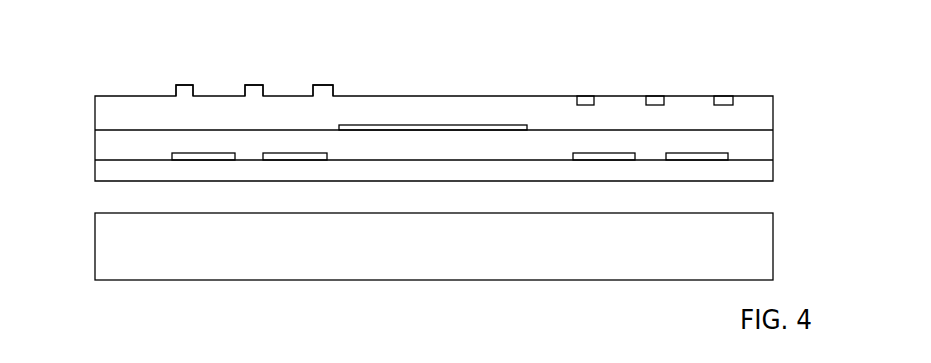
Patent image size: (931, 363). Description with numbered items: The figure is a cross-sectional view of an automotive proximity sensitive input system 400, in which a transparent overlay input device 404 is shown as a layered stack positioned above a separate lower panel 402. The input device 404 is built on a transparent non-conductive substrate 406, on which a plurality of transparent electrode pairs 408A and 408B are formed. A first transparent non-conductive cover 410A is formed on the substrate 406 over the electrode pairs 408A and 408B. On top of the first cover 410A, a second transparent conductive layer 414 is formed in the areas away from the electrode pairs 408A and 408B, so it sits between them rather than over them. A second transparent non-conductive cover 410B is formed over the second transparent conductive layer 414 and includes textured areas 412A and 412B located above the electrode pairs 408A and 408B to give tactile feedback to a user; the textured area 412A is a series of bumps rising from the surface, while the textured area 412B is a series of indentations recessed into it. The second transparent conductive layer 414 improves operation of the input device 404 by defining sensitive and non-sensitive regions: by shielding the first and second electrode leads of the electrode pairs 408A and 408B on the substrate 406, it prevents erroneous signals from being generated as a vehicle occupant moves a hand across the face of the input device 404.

The automotive proximity sensitive input system 400 is at (752, 43).
The substrate 402 is at (95, 243).
The input device 404 is at (806, 143).
The transparent non-conductive substrate 406 is at (95, 179).
The transparent electrode pair 408A is at (208, 160).
The transparent electrode pair 408B is at (608, 160).
The first transparent non-conductive cover 410A is at (95, 147).
The second transparent non-conductive cover 410B is at (95, 100).
The textured area 412A is at (333, 78).
The textured area 412B is at (733, 90).
The second transparent conductive layer 414 is at (400, 127).